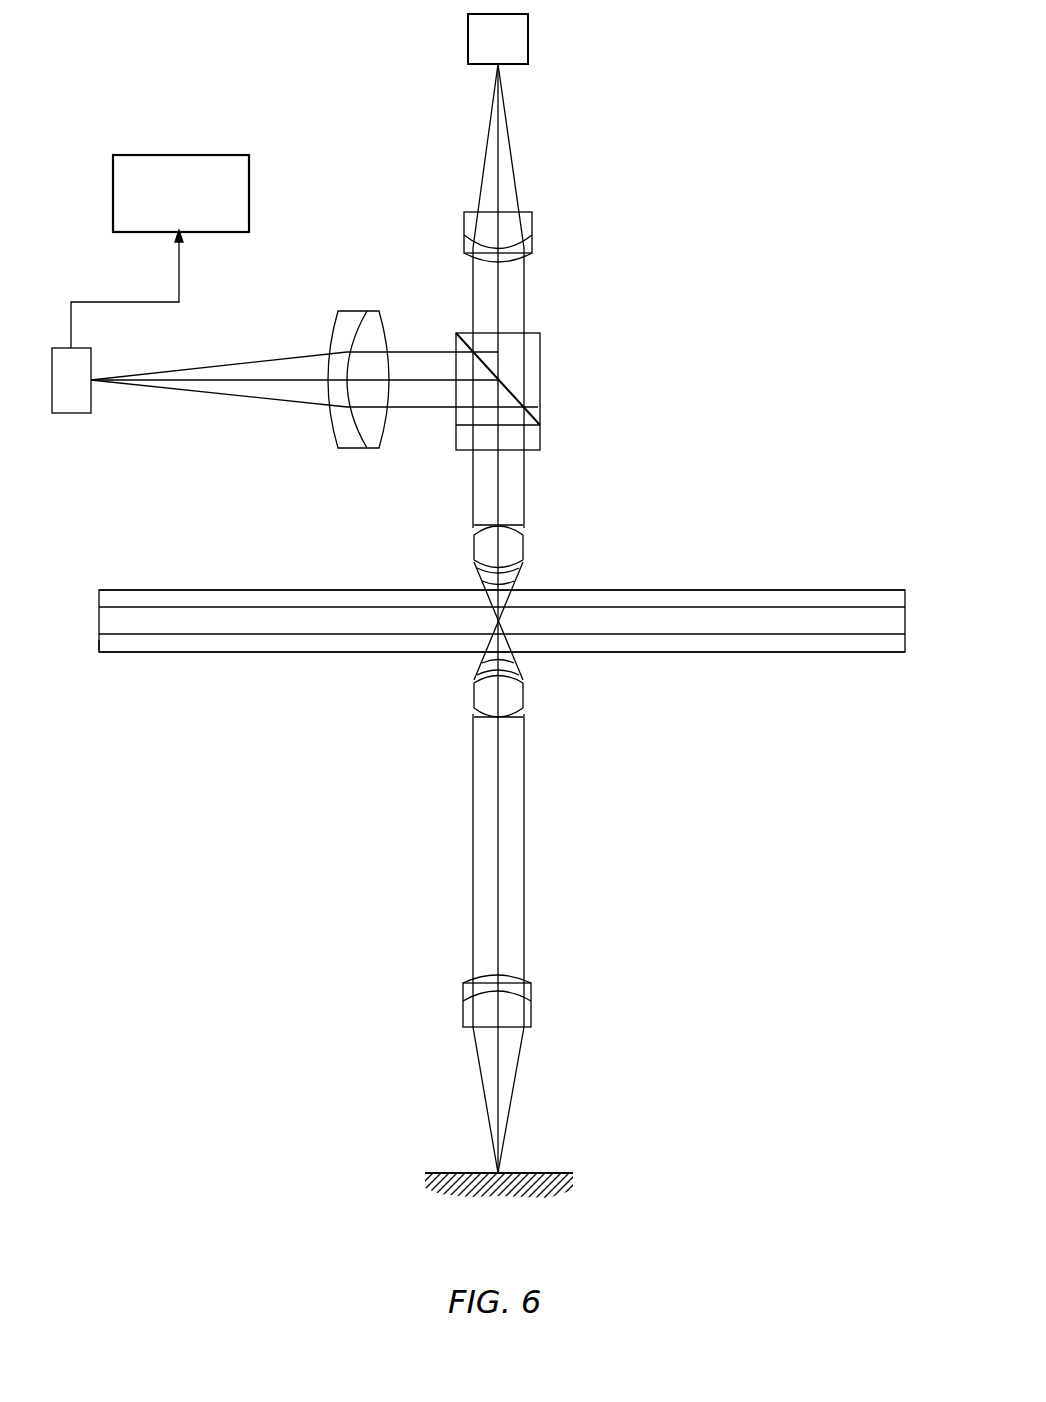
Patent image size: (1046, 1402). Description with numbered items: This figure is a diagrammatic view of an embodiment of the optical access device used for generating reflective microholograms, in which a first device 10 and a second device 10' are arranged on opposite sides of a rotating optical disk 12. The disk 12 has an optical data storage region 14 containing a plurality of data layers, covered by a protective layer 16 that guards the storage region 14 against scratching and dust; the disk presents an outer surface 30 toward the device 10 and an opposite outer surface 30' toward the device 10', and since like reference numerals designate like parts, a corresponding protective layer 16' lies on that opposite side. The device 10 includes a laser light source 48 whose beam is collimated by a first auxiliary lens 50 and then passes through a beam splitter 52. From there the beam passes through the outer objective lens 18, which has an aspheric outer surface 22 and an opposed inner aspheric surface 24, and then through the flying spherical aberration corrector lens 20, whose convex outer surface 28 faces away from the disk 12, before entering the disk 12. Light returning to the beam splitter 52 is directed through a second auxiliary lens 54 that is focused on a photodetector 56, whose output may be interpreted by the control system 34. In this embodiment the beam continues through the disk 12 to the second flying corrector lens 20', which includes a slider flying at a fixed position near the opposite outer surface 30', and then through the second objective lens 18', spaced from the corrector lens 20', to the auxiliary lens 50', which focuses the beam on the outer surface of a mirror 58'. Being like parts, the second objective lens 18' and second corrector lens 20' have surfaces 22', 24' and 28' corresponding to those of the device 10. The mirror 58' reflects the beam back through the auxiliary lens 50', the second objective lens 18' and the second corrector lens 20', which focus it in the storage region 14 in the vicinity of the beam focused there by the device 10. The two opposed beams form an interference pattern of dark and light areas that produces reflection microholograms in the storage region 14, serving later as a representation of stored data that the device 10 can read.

The light source 48 is at (528, 40).
The first auxiliary lens 50 is at (530, 227).
The beam splitter 52 is at (540, 375).
The second auxiliary lens 54 is at (357, 311).
The photodetector 56 is at (91, 413).
The control system 34 is at (183, 155).
The optical access device 10 is at (497, 546).
The objective lens 18 is at (470, 533).
The aspheric outer surface 22 is at (527, 517).
The convex outer surface 28 is at (471, 555).
The inner aspheric surface 24 is at (531, 579).
The flying spherical aberration corrector lens 20 is at (451, 573).
The optical disk 12 is at (836, 595).
The outer surface 30 is at (502, 569).
The protective layer 16 is at (502, 567).
The optical data storage region 14 is at (752, 625).
The opposite outer surface 30' is at (502, 683).
The bottom surface 16' is at (211, 674).
The device 10' is at (500, 696).
The objective lens 18' is at (532, 709).
The lens surface 22' is at (469, 724).
The lens surface 28' is at (530, 685).
The lens element 24' is at (465, 663).
The flying corrector lens 20' is at (547, 670).
The auxiliary lens 50' is at (464, 1010).
The mirror 58' is at (499, 1215).